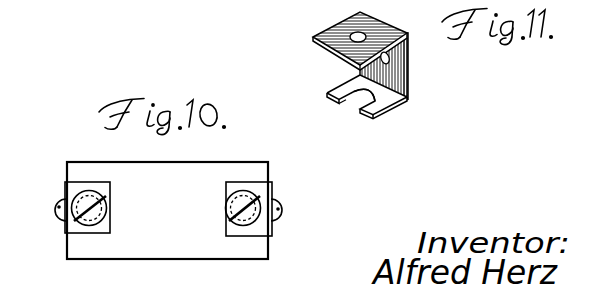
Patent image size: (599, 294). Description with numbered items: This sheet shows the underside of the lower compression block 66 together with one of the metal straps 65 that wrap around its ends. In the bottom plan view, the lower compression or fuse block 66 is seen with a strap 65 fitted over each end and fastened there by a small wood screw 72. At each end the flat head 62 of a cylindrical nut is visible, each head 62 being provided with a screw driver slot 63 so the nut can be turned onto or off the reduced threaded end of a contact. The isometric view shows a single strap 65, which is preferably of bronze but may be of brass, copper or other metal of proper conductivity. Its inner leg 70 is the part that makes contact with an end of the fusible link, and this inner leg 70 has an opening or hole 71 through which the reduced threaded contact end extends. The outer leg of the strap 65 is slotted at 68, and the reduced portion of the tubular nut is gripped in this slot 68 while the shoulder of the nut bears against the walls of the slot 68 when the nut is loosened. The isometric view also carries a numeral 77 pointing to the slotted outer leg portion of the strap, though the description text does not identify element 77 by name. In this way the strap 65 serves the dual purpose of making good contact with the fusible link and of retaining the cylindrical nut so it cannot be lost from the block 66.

In FIG. 10, the flat head 62 is at (66, 186).
In FIG. 10, the screw driver slot 63 is at (73, 217).
In FIG. 10, the strap 65 is at (73, 193).
In FIG. 11, the strap 65 is at (398, 62).
In FIG. 10, the lower compression block 66 is at (163, 238).
In FIG. 10, the slot 68 is at (228, 202).
In FIG. 11, the slot 68 is at (360, 99).
In FIG. 11, the inner leg 70 is at (313, 39).
In FIG. 11, the opening or hole 71 is at (364, 34).
In FIG. 10, the small wood screw 72 is at (58, 208).
In FIG. 11, the bottom plate of clip 77 is at (400, 100).